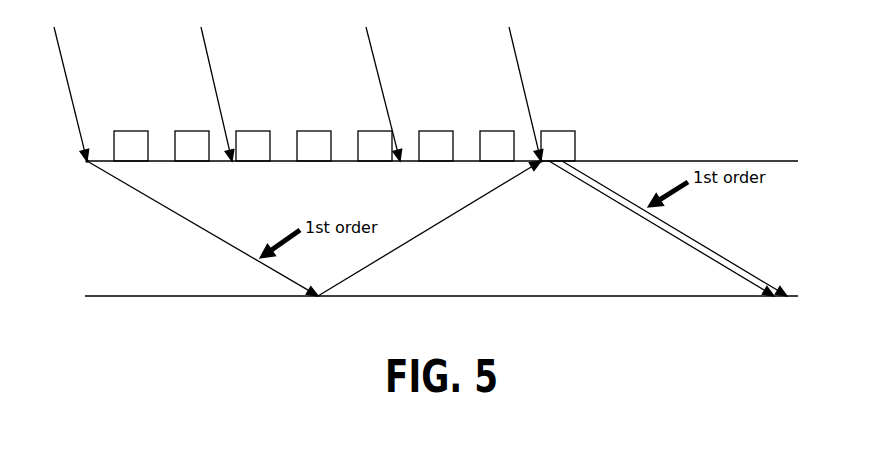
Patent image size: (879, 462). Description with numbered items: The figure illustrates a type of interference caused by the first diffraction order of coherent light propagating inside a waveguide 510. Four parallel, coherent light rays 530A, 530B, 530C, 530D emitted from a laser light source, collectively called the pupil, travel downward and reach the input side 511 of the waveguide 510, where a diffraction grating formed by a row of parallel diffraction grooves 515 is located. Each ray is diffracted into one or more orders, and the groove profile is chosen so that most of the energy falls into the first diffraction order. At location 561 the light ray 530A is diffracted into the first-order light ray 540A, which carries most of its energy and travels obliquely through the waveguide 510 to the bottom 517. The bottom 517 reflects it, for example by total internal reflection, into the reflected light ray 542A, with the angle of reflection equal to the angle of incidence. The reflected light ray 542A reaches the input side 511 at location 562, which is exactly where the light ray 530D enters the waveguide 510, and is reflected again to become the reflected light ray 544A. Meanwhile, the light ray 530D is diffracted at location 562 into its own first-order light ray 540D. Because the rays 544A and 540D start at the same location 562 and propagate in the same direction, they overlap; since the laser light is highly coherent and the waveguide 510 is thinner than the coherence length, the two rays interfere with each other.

The waveguide 510 is at (738, 243).
The input side of the waveguide 511 is at (659, 160).
The diffraction grooves 515 is at (344, 146).
The bottom of the waveguide 517 is at (495, 295).
The light ray 530A is at (58, 42).
The light ray 530B is at (205, 42).
The light ray 530C is at (372, 42).
The light ray 530D is at (514, 42).
The light ray of the first diffraction order 540A is at (202, 228).
The light ray of the first diffraction order 540D is at (697, 240).
The reflected light ray 542A is at (425, 232).
The reflected light ray 544A is at (650, 223).
The location 561 is at (86, 164).
The location 562 is at (543, 168).